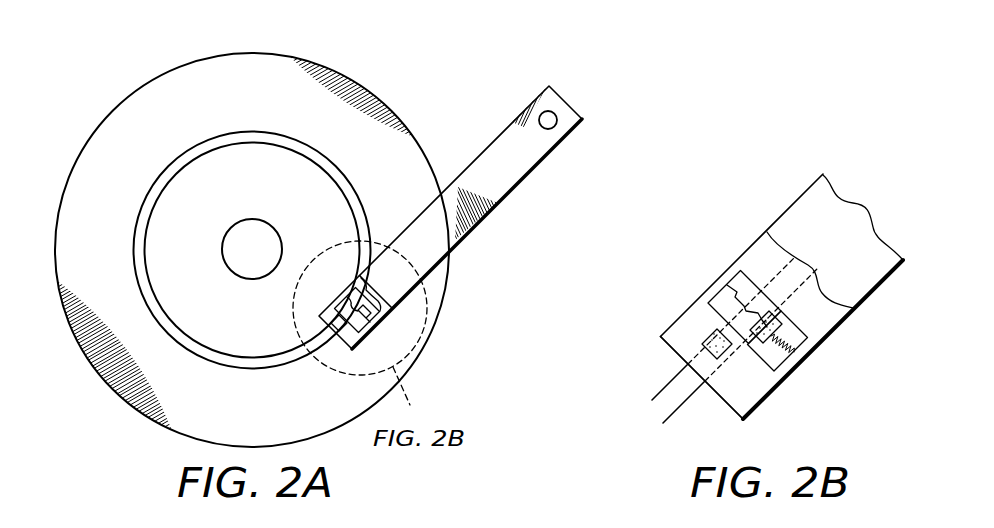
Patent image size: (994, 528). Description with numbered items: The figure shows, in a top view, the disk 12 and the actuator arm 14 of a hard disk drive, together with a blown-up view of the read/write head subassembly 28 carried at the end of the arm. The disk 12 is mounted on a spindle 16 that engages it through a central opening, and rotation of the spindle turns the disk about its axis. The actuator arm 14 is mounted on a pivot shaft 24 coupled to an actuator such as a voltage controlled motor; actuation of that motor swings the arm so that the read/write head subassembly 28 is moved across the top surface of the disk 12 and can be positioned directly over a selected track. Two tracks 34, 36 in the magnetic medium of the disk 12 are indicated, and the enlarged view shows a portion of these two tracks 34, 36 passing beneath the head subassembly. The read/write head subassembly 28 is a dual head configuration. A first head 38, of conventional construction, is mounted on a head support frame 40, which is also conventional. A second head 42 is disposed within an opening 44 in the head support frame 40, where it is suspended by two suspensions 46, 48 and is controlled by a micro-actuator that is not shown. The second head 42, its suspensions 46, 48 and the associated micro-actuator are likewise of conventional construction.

In FIG. 2A, the disk 12 is at (145, 99).
In FIG. 2A, the actuator arm 14 is at (520, 168).
In FIG. 2B, the actuator arm 14 is at (808, 203).
In FIG. 2A, the spindle 16 is at (240, 232).
In FIG. 2A, the pivot shaft 24 is at (556, 112).
In FIG. 2A, the read/write head subassembly 28 is at (360, 344).
In FIG. 2B, the read/write head subassembly 28 is at (760, 405).
In FIG. 2A, the track 34 is at (254, 140).
In FIG. 2B, the track 34 is at (667, 383).
In FIG. 2A, the track 36 is at (250, 130).
In FIG. 2B, the track 36 is at (683, 403).
In FIG. 2B, the first head 38 is at (718, 327).
In FIG. 2B, the head support frame 40 is at (678, 333).
In FIG. 2B, the second head 42 is at (782, 323).
In FIG. 2B, the opening 44 is at (807, 347).
In FIG. 2B, the suspension 46 is at (737, 285).
In FIG. 2B, the suspension 48 is at (785, 368).